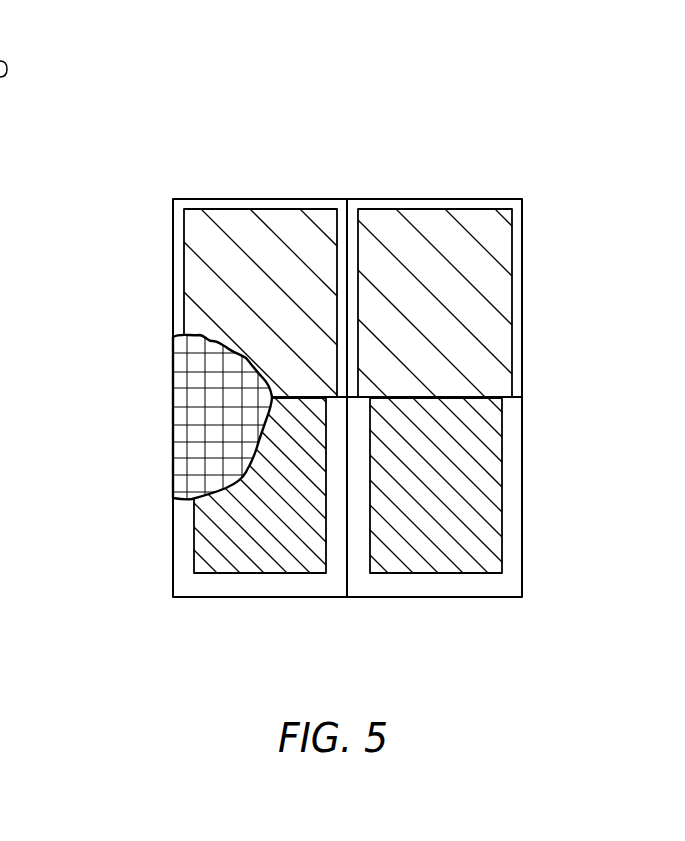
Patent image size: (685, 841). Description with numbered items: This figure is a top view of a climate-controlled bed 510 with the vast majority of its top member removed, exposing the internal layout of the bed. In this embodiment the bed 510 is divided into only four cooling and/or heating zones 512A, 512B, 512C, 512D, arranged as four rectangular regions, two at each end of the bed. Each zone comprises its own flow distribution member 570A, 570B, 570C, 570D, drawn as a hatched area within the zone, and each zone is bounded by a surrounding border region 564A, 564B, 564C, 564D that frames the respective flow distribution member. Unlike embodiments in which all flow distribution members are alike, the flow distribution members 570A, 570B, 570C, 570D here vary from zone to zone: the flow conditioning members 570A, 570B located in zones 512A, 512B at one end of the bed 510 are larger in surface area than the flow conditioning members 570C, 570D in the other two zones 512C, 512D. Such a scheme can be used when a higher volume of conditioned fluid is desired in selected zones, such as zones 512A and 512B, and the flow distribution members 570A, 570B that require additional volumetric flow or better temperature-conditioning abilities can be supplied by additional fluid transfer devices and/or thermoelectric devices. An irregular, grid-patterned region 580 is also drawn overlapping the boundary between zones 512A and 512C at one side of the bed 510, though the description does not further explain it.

The climate-controlled bed 510 is at (362, 350).
The cooling and/or heating zone 512A is at (269, 299).
The cooling and/or heating zone 512B is at (441, 293).
The cooling and/or heating zone 512C is at (269, 520).
The cooling and/or heating zone 512D is at (438, 481).
The guard region A 564A is at (178, 308).
The guard region B 564B is at (517, 339).
The guard region C 564C is at (182, 559).
The guard region D 564D is at (517, 537).
The flow distribution member 570A is at (191, 259).
The flow distribution member 570B is at (490, 289).
The flow distribution member 570C is at (257, 567).
The flow distribution member 570D is at (483, 488).
The defect / contaminated region 580 is at (200, 433).